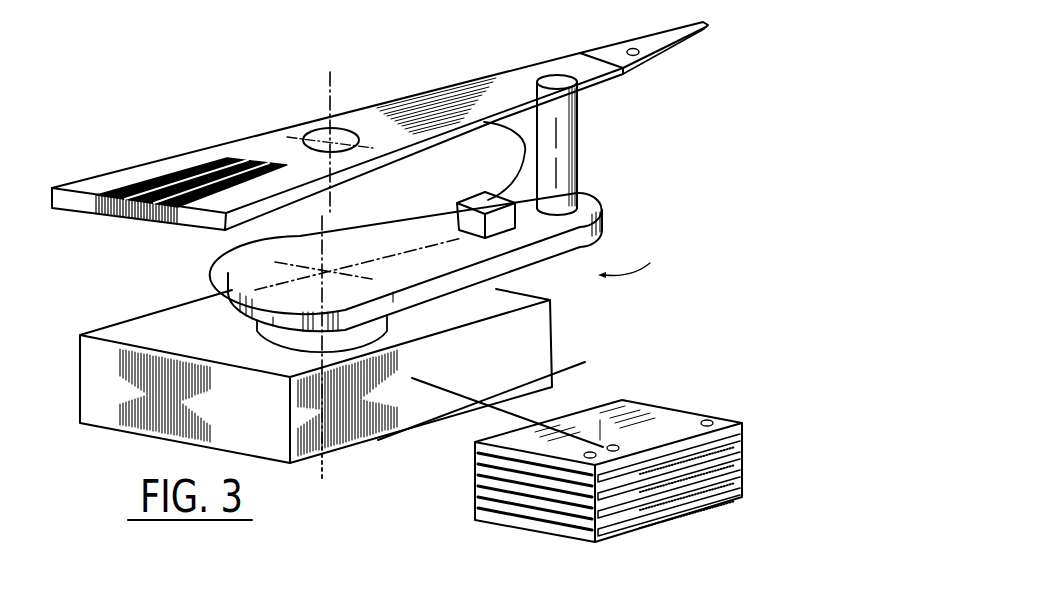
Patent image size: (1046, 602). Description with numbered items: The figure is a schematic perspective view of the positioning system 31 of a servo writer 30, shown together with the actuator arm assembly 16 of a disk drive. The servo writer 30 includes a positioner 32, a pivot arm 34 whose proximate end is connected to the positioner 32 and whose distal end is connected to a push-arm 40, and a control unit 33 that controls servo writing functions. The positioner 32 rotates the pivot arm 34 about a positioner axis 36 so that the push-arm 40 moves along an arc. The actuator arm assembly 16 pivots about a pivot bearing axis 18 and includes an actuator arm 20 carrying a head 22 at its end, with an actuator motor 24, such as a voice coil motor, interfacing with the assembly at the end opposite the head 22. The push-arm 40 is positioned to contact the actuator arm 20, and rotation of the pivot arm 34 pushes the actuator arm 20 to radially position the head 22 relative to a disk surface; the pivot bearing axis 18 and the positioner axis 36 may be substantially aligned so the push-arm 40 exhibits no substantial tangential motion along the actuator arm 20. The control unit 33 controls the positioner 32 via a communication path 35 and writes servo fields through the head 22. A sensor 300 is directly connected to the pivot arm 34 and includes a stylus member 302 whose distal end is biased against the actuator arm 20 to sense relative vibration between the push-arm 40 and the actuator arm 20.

The actuator arm assembly 16 is at (268, 110).
The pivot bearing axis 18 is at (333, 88).
The actuator arm 20 is at (468, 80).
The head 22 is at (704, 25).
The actuator motor 24 is at (160, 176).
The servo writer 30 is at (732, 239).
The positioning system 31 is at (630, 256).
The positioner 32 is at (553, 333).
The control unit 33 is at (673, 417).
The pivot arm 34 is at (432, 214).
The communication path 35 is at (515, 403).
The positioner axis 36 is at (320, 460).
The push-arm 40 is at (580, 147).
The sensor 300 is at (499, 219).
The stylus member 302 is at (508, 128).